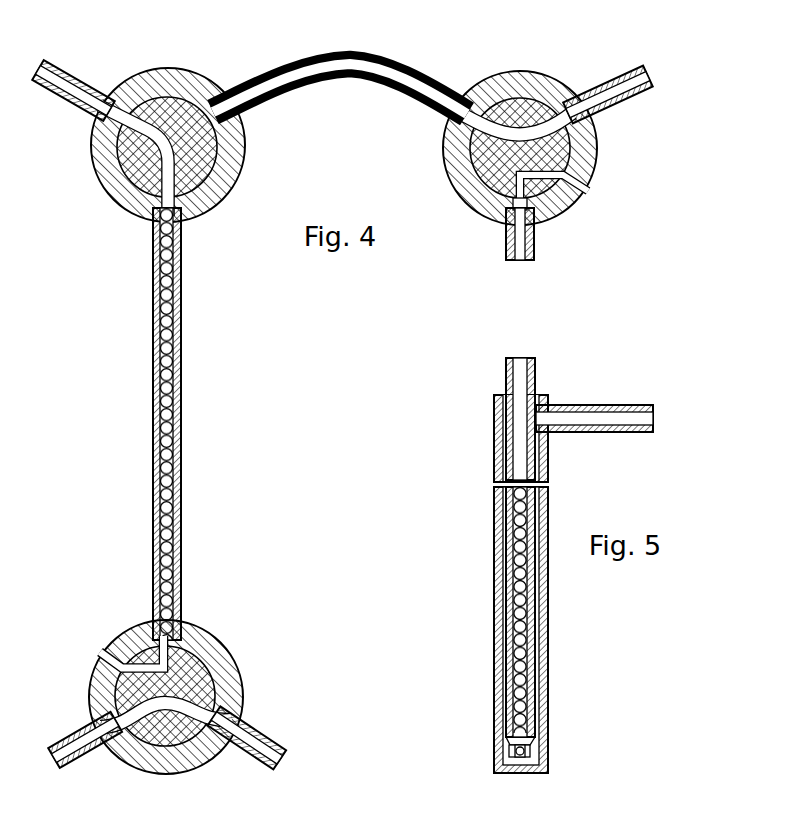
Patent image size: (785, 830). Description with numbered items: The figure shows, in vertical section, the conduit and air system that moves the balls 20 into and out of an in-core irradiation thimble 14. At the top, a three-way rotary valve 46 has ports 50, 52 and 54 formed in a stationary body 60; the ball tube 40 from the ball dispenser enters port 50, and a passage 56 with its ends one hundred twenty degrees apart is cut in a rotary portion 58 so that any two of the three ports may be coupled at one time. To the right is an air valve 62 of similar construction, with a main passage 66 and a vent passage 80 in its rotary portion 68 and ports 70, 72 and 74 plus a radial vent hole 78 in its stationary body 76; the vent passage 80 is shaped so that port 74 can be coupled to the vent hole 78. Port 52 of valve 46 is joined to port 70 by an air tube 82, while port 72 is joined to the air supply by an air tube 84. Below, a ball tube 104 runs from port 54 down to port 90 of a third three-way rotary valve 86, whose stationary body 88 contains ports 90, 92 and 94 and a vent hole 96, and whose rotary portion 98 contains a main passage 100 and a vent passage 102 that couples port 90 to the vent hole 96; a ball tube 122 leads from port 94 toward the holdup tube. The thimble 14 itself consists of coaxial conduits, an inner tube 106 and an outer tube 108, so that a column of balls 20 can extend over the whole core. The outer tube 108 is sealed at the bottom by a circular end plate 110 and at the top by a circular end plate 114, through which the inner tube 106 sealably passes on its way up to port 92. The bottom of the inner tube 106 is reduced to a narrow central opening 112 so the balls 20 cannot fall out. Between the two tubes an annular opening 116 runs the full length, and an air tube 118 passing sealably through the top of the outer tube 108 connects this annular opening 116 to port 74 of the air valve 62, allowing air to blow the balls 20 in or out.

In FIG. 5, the in-core irradiation thimble 14 is at (573, 571).
In FIG. 4, the balls 20 is at (193, 424).
In FIG. 5, the balls 20 is at (521, 640).
In FIG. 4, the ball tube 40 is at (65, 72).
In FIG. 4, the three-way rotary valve 46 is at (166, 143).
In FIG. 4, the port 50 is at (159, 150).
In FIG. 4, the port 52 is at (217, 117).
In FIG. 4, the port 54 is at (175, 204).
In FIG. 4, the passage 56 is at (147, 102).
In FIG. 4, the rotary portion 58 is at (167, 121).
In FIG. 4, the stationary body 60 is at (238, 172).
In FIG. 4, the air valve 62 is at (521, 139).
In FIG. 4, the main passage 66 is at (547, 130).
In FIG. 4, the rotary portion 68 is at (520, 117).
In FIG. 4, the port 70 is at (510, 93).
In FIG. 4, the port 72 is at (538, 155).
In FIG. 4, the port 74 is at (493, 216).
In FIG. 4, the stationary body 76 is at (522, 73).
In FIG. 4, the radial vent hole 78 is at (570, 209).
In FIG. 4, the vent passage 80 is at (552, 214).
In FIG. 4, the air tube 82 is at (338, 68).
In FIG. 4, the air tube 84 is at (613, 78).
In FIG. 4, the three-way rotary valve 86 is at (155, 691).
In FIG. 4, the stationary body 88 is at (170, 697).
In FIG. 4, the port 90 is at (187, 640).
In FIG. 4, the port 92 is at (187, 662).
In FIG. 4, the port 94 is at (126, 748).
In FIG. 4, the vent hole 96 is at (111, 638).
In FIG. 4, the rotary portion 98 is at (183, 735).
In FIG. 4, the main passage 100 is at (155, 662).
In FIG. 4, the vent passage 102 is at (130, 636).
In FIG. 4, the ball tube 104 is at (180, 373).
In FIG. 4, the inner tube 106 is at (277, 745).
In FIG. 5, the inner tube 106 is at (552, 612).
In FIG. 5, the outer tube 108 is at (546, 470).
In FIG. 5, the circular end plate 110 is at (530, 777).
In FIG. 5, the central opening 112 is at (530, 748).
In FIG. 5, the circular end plate 114 is at (542, 405).
In FIG. 5, the annular opening 116 is at (544, 636).
In FIG. 4, the air tube 118 is at (506, 252).
In FIG. 5, the air tube 118 is at (620, 404).
In FIG. 4, the ball tube 122 is at (62, 742).